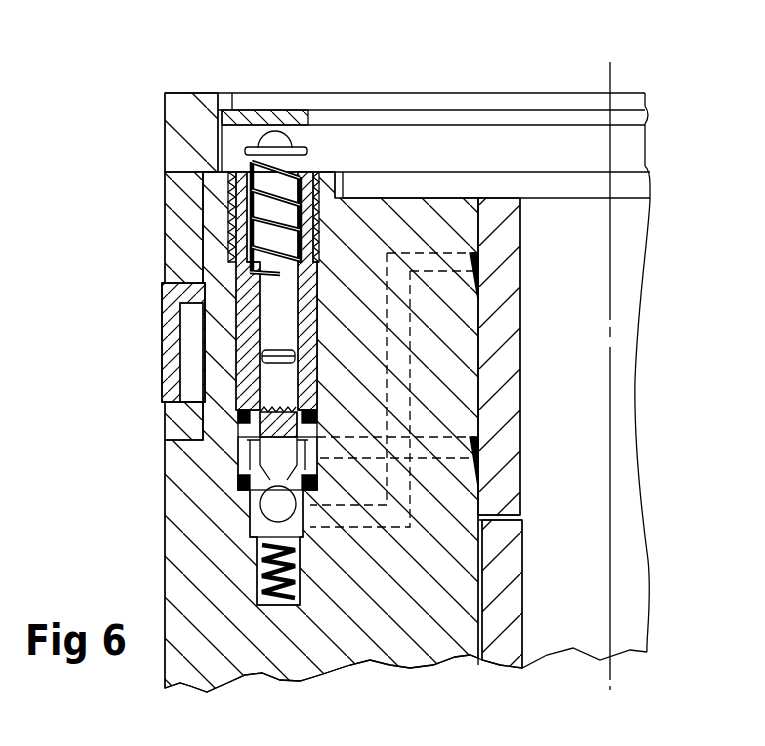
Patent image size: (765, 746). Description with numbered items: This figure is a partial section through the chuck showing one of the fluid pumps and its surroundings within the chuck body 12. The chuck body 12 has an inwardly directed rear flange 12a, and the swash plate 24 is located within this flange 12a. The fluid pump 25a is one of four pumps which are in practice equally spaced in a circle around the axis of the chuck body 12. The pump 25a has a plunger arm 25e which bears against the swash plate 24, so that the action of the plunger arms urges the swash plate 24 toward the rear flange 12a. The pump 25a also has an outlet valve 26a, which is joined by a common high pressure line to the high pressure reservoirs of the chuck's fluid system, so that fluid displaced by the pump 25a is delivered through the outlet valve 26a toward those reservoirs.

The chuck body 12 is at (165, 465).
The inwardly directed flange 12a is at (165, 220).
The swash plate 24 is at (257, 118).
The fluid pump 25a is at (248, 347).
The plunger arm 25e is at (275, 385).
The outlet valve 26a is at (268, 507).